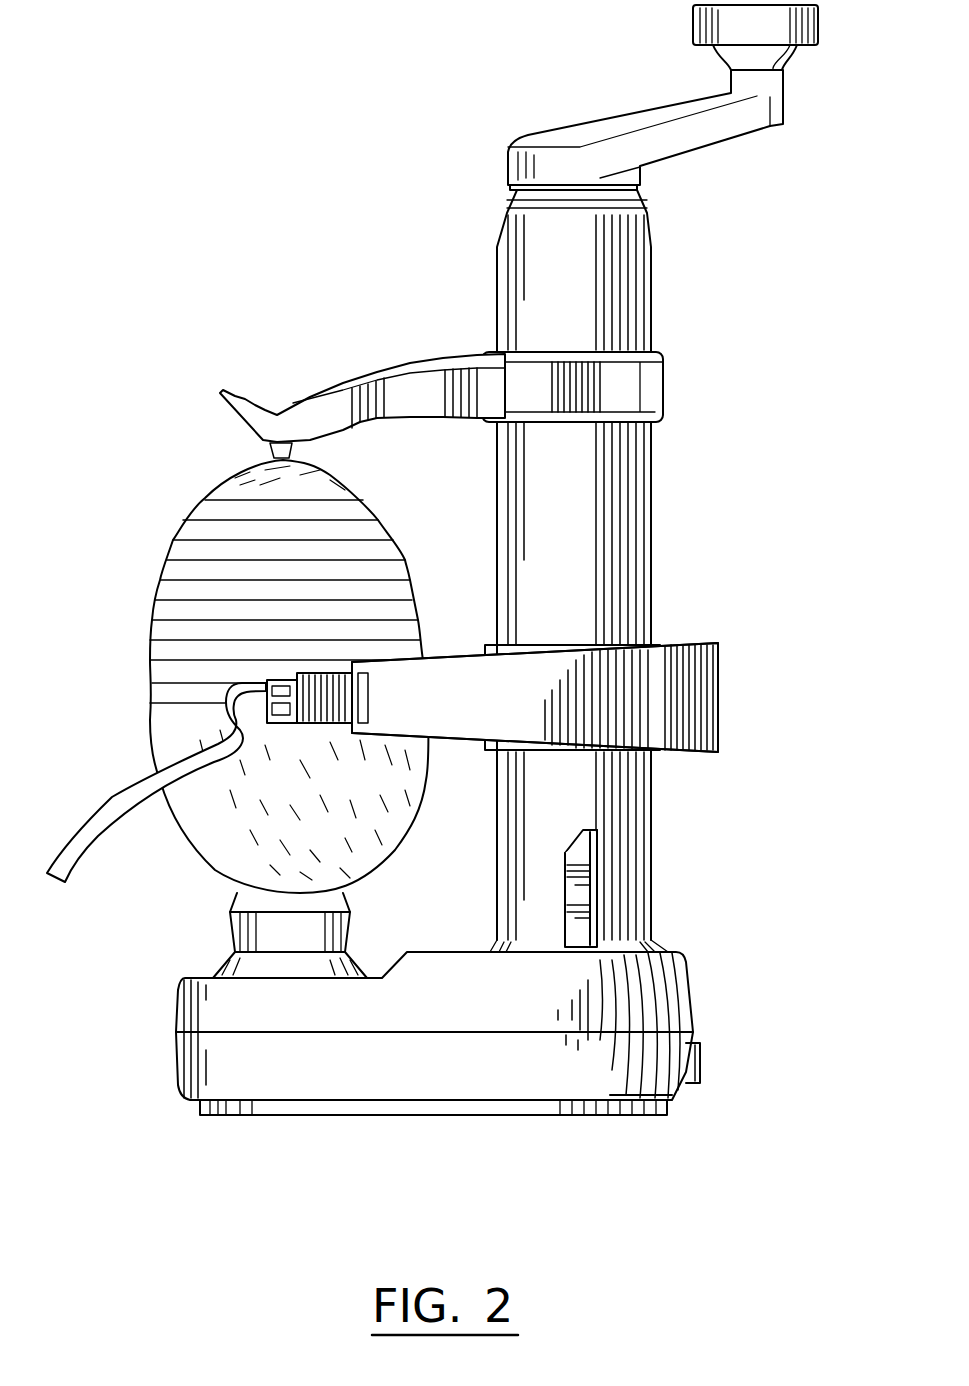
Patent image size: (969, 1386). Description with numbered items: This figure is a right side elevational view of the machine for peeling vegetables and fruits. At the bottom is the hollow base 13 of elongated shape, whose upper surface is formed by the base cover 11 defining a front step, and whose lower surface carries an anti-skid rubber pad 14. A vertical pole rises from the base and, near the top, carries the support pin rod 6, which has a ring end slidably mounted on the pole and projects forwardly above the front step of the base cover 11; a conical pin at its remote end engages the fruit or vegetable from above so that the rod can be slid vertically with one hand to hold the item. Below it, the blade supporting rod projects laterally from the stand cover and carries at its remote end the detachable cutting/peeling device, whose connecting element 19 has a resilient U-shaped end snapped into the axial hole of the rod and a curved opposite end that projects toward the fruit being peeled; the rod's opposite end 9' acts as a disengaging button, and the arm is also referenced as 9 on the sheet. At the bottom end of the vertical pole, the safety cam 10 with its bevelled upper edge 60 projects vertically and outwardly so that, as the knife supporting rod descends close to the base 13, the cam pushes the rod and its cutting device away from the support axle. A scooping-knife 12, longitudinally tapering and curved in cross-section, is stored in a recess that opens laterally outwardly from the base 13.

The support pin rod 6 is at (290, 415).
The connecting element 19 is at (328, 680).
The opposite end of blade supporting rod 9' is at (573, 680).
The peeler arm 9 is at (535, 697).
The bevelled upper edge 60 is at (573, 845).
The safety cam 10 is at (587, 905).
The base cover 11 is at (700, 997).
The scooping-knife 12 is at (700, 1067).
The hollow base 13 is at (672, 1103).
The anti-skid rubber pad 14 is at (525, 1115).